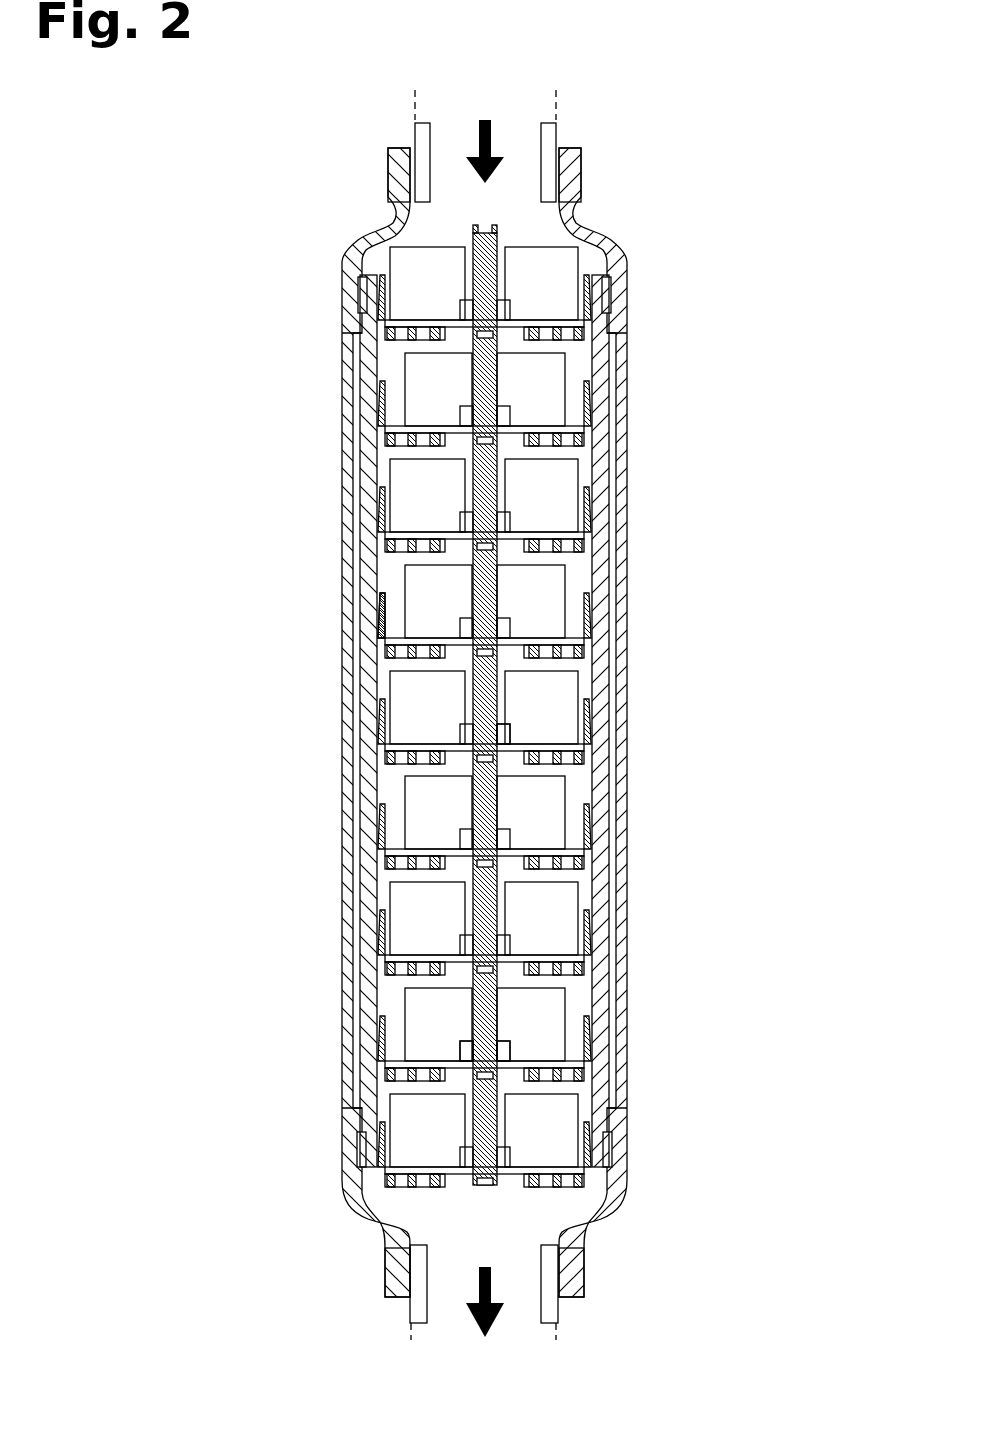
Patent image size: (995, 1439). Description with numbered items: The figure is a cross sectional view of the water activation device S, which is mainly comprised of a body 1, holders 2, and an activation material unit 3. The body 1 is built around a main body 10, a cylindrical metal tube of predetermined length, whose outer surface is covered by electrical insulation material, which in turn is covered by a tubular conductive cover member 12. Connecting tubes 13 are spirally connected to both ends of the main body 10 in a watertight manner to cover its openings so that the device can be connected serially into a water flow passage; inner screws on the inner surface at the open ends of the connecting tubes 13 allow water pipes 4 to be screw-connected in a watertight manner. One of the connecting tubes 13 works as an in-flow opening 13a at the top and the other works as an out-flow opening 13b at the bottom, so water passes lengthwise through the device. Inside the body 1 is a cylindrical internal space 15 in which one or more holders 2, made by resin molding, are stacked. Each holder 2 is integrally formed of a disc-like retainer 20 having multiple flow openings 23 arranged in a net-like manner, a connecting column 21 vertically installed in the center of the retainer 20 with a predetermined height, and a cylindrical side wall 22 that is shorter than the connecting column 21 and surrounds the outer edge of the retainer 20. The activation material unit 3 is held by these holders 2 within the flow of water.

The water activation device S is at (292, 219).
The body 1 is at (326, 388).
The holder 2 is at (518, 600).
The activation material unit 3 is at (563, 793).
The water pipe 4 is at (552, 133).
The main body 10 is at (372, 470).
The cover member 12 is at (630, 442).
The connecting tube 13 is at (620, 298).
The in-flow opening 13a is at (572, 192).
The out-flow opening 13b is at (578, 1283).
The cylindrical internal space 15 is at (398, 590).
The retainer 20 is at (423, 950).
The connecting column 21 is at (500, 708).
The side wall 22 is at (573, 918).
The flow opening 23 is at (510, 1048).